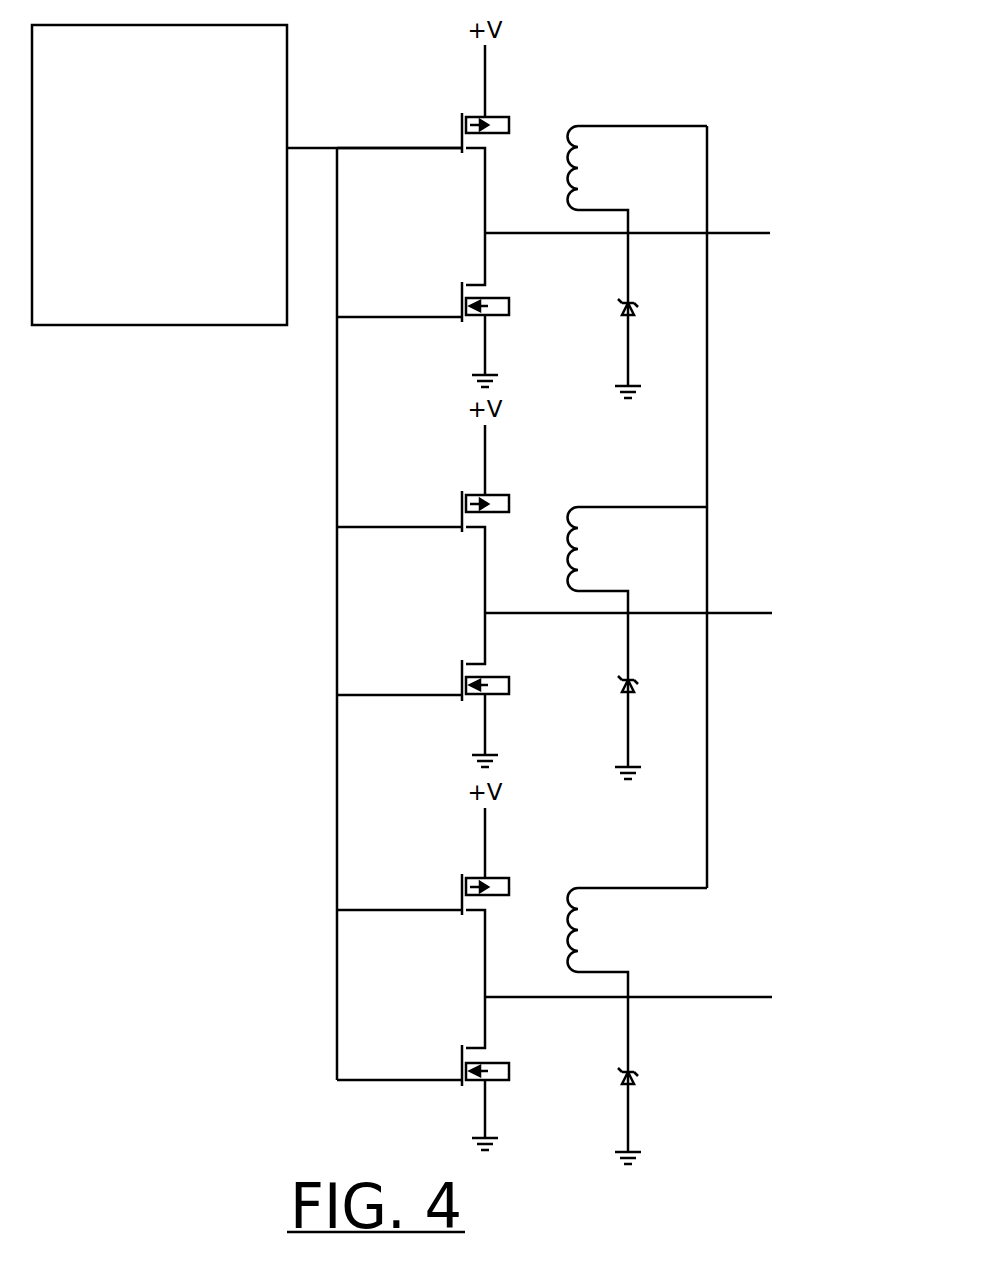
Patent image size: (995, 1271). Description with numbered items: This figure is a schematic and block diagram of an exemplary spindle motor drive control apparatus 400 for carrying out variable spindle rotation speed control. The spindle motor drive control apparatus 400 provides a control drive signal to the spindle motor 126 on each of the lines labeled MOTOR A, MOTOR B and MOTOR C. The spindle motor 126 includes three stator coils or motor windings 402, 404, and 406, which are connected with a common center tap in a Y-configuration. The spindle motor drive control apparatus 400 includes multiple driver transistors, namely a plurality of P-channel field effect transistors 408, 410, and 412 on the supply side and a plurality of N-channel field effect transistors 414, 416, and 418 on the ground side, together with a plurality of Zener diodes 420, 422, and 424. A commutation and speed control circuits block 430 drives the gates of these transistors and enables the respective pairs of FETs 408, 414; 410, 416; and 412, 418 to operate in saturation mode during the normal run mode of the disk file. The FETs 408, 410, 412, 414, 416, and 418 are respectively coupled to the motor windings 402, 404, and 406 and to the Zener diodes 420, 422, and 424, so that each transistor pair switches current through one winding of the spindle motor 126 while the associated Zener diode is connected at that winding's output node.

The spindle motor drive control apparatus 400 is at (207, 636).
The spindle motor 126 is at (853, 537).
The commutation and speed control circuits block 430 is at (159, 175).
The motor winding 402 is at (638, 179).
The motor winding 404 is at (638, 560).
The motor winding 406 is at (638, 942).
The P-channel field effect transistor 408 is at (423, 139).
The P-channel field effect transistor 410 is at (423, 519).
The P-channel field effect transistor 412 is at (423, 902).
The N-channel field effect transistor 414 is at (423, 310).
The N-channel field effect transistor 416 is at (423, 690).
The N-channel field effect transistor 418 is at (423, 1073).
The Zener diode 420 is at (652, 315).
The Zener diode 422 is at (652, 696).
The Zener diode 424 is at (652, 1080).